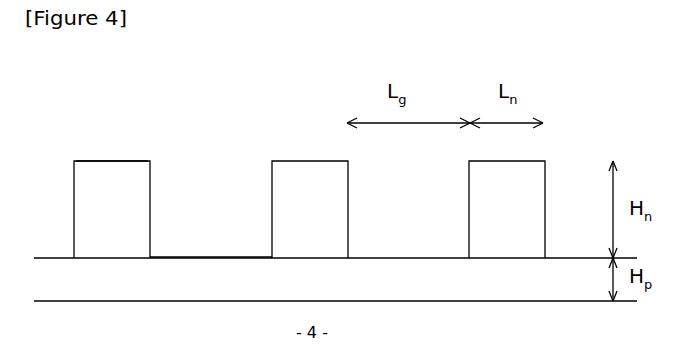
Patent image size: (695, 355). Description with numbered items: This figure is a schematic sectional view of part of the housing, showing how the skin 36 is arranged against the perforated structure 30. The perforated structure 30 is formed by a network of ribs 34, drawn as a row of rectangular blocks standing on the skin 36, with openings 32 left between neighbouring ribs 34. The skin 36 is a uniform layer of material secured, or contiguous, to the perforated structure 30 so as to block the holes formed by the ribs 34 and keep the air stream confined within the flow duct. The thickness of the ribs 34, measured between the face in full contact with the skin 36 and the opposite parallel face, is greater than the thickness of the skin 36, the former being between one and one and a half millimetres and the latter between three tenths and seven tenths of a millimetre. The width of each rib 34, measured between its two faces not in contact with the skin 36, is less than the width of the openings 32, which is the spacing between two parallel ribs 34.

The perforated structure 30 is at (309, 209).
The opening 32 is at (210, 205).
The rib 34 is at (104, 161).
The skin 36 is at (335, 279).